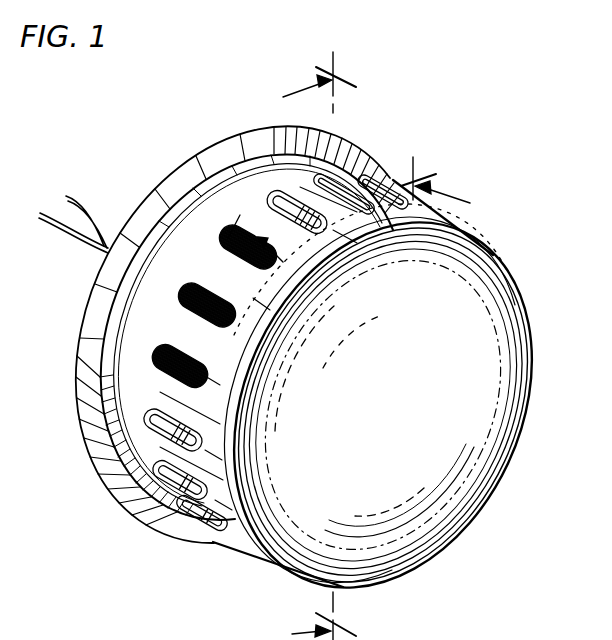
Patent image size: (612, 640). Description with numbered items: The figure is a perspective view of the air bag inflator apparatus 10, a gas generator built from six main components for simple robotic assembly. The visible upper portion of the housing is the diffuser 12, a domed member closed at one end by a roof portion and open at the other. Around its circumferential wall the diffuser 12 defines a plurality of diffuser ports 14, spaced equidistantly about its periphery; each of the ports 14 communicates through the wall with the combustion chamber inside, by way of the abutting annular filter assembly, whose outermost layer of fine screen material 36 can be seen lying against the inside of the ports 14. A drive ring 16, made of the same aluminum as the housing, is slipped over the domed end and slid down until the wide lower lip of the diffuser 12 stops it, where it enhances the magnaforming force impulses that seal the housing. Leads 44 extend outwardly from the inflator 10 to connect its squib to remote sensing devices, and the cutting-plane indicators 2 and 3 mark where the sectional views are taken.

The air bag inflator apparatus 10 is at (358, 144).
The diffuser 12 is at (415, 400).
The diffuser ports 14 is at (150, 348).
The drive ring 16 is at (80, 343).
The outermost layer of screen material 36 is at (236, 300).
The leads 44 is at (78, 206).
The section line 2- 2 is at (356, 220).
The section line 3- 3 is at (304, 346).